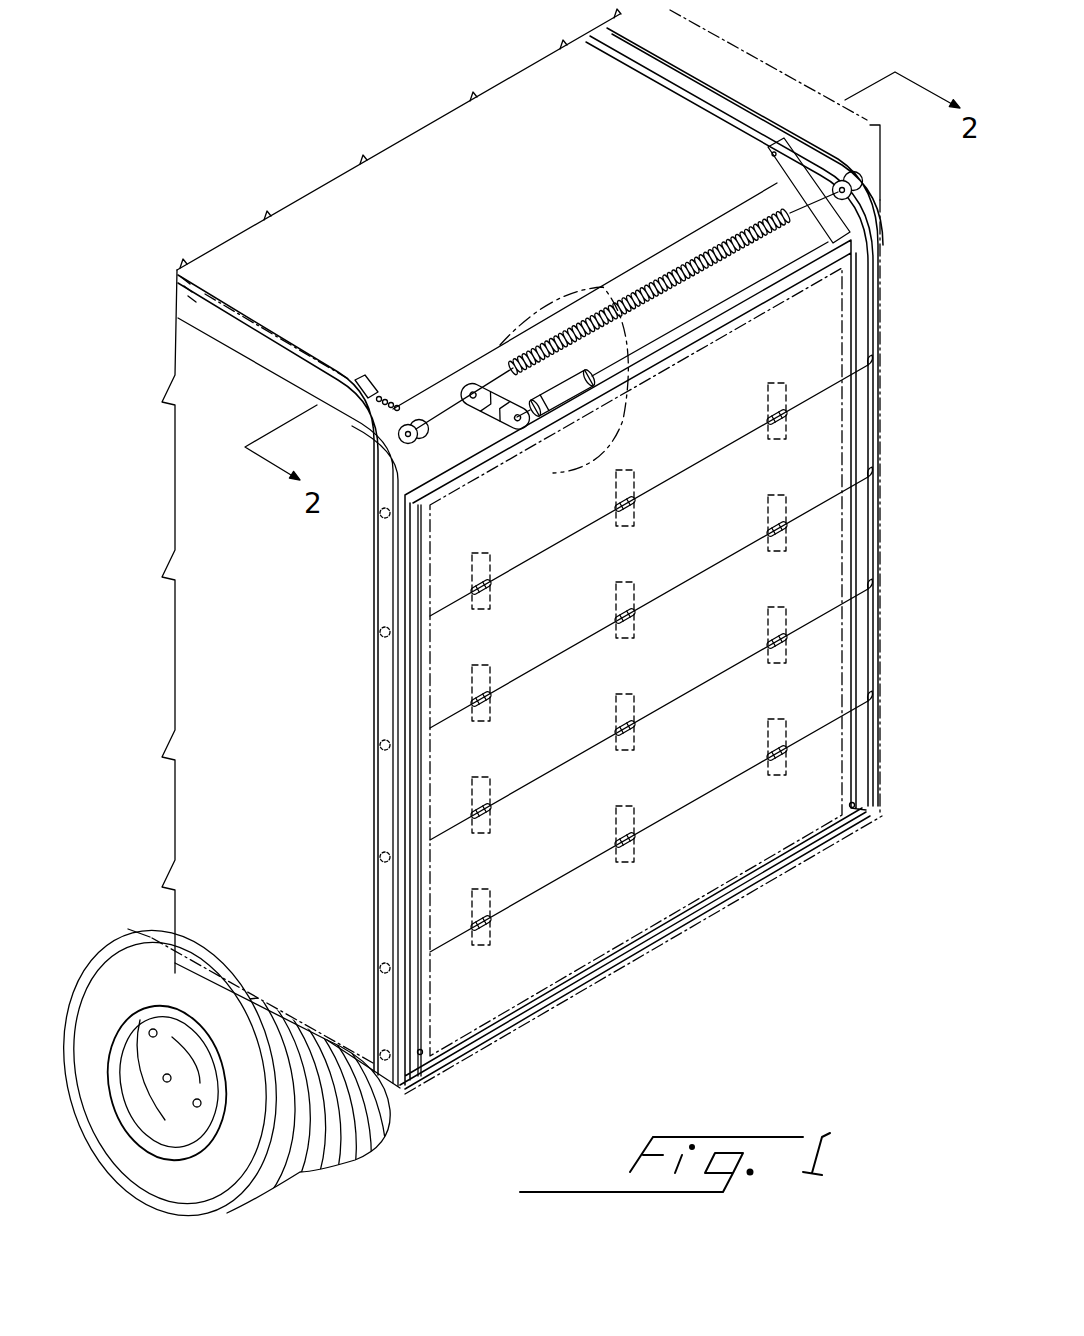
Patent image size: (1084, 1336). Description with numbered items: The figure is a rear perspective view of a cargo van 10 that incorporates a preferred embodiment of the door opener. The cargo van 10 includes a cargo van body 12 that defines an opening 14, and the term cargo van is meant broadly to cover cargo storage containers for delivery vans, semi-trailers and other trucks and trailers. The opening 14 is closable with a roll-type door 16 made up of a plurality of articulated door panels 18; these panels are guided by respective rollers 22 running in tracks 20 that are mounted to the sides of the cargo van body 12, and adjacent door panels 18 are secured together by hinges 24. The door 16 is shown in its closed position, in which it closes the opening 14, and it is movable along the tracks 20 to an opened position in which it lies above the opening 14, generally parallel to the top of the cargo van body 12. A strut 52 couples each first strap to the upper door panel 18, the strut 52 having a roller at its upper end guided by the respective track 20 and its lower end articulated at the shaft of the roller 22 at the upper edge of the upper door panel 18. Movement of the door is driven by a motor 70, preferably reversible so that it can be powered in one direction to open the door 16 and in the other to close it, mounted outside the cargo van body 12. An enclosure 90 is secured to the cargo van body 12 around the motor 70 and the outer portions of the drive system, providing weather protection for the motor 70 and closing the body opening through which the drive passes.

The cargo van 10 is at (463, 1165).
The cargo van body 12 is at (500, 224).
The opening 14 is at (868, 750).
The roll-type door 16 is at (817, 570).
The door panels 18 is at (808, 355).
The tracks 20 is at (670, 88).
The rollers 22 is at (870, 467).
The hinges 24 is at (620, 532).
The strut 52 is at (783, 160).
The motor 70 is at (605, 383).
The enclosure 90 is at (553, 460).